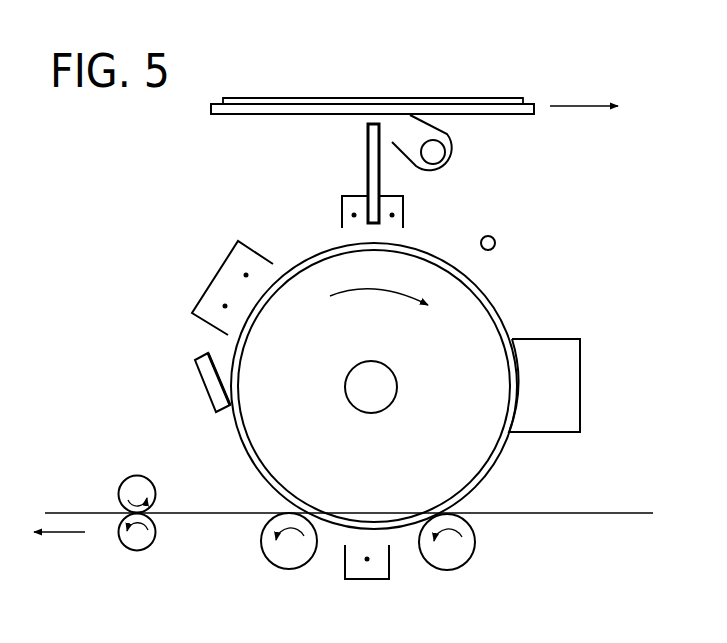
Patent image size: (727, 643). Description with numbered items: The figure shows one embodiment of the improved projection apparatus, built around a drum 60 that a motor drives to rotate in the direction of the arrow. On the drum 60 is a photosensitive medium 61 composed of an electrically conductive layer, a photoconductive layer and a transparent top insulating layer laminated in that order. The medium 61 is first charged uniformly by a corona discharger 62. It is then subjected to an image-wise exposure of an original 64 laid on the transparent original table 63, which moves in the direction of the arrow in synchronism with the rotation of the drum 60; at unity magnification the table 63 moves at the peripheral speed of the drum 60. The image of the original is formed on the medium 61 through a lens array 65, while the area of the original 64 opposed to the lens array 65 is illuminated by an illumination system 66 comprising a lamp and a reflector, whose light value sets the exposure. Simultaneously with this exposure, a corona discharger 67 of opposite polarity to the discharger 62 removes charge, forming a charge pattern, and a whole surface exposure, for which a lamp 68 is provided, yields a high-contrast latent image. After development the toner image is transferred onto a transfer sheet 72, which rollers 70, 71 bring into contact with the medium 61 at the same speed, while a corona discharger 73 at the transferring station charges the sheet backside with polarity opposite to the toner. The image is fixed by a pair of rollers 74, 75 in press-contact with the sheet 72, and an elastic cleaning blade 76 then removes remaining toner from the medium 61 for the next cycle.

The drum 60 is at (258, 424).
The photosensitive medium 61 is at (252, 467).
The corona discharger 62 is at (215, 276).
The transparent original table 63 is at (512, 115).
The original 64 is at (505, 98).
The lens array 65 is at (368, 138).
The illumination system 66 is at (455, 160).
The corona discharger 67 is at (342, 210).
The lamp 68 is at (495, 238).
The roller 70 is at (445, 573).
The roller 71 is at (283, 572).
The transfer sheet 72 is at (607, 512).
The corona discharger 73 is at (363, 582).
The roller 74 is at (150, 542).
The roller 75 is at (137, 476).
The elastic cleaning blade 76 is at (197, 378).